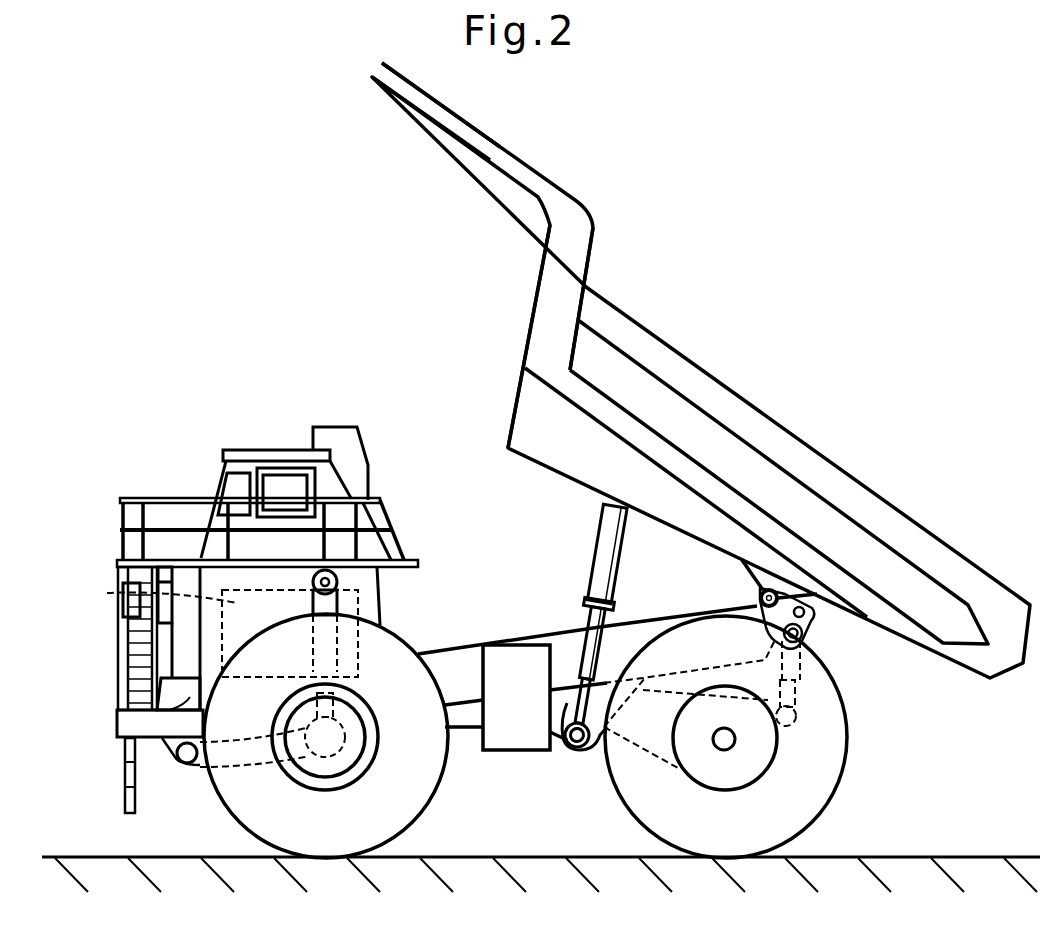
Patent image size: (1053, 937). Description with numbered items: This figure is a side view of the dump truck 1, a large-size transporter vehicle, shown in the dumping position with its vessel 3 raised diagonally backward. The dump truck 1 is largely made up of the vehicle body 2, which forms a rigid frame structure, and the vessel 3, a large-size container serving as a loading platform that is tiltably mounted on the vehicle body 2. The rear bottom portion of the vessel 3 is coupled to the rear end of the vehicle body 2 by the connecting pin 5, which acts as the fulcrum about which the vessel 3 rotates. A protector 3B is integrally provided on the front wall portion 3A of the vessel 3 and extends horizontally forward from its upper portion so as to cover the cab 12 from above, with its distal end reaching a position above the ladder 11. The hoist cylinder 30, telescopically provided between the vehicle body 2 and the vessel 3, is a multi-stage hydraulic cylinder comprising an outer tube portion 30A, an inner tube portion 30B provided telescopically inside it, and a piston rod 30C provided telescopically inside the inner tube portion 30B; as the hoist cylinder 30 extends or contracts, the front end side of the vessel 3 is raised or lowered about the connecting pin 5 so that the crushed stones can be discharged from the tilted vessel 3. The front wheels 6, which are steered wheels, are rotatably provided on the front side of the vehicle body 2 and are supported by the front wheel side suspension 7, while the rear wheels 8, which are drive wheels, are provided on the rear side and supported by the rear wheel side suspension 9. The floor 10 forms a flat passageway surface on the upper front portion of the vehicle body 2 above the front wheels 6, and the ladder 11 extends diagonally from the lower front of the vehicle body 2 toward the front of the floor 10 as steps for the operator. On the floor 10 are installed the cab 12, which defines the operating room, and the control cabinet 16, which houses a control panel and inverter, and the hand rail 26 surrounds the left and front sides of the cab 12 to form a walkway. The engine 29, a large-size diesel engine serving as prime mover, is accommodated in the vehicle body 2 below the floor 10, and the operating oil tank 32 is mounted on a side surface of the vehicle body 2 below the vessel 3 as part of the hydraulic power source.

The dump truck 1 is at (280, 412).
The vehicle body 2 is at (467, 665).
The vessel 3 is at (766, 400).
The front wall portion 3A is at (533, 319).
The protector 3B is at (443, 135).
The connecting pin 5 is at (758, 597).
The front wheels 6 is at (240, 793).
The front wheel side suspension 7 is at (338, 602).
The rear wheels 8 is at (810, 800).
The rear wheel side suspension 9 is at (800, 668).
The floor 10 is at (118, 557).
The ladder 11 is at (137, 660).
The cab 12 is at (228, 462).
The control cabinet 16 is at (347, 450).
The hand rail 26 is at (160, 496).
The engine 29 is at (123, 598).
The hoist cylinder 30 is at (584, 571).
The outer tube portion 30A is at (620, 562).
The inner tube portion 30B is at (585, 624).
The piston rod 30C is at (565, 750).
The operating oil tank 32 is at (503, 752).